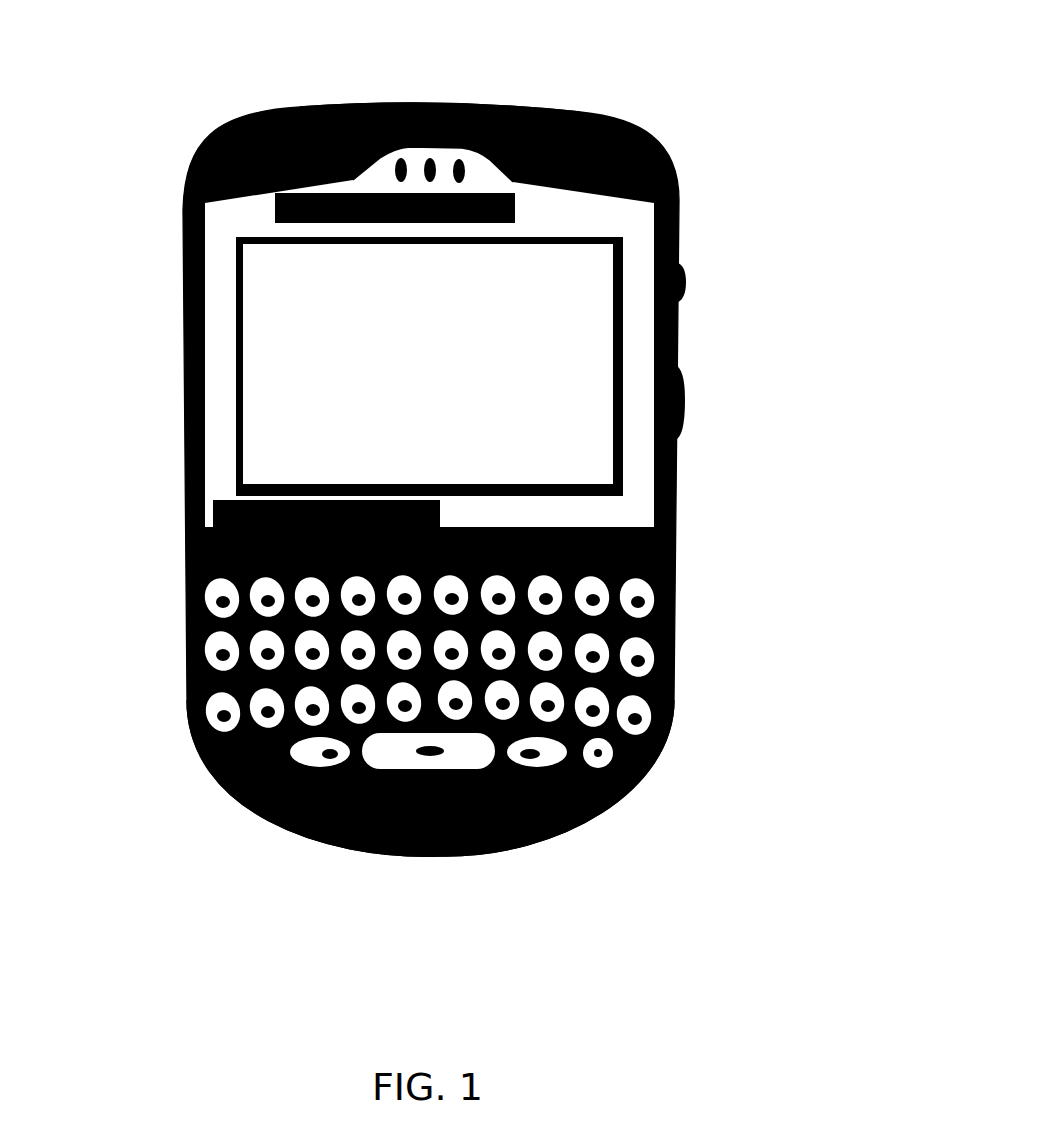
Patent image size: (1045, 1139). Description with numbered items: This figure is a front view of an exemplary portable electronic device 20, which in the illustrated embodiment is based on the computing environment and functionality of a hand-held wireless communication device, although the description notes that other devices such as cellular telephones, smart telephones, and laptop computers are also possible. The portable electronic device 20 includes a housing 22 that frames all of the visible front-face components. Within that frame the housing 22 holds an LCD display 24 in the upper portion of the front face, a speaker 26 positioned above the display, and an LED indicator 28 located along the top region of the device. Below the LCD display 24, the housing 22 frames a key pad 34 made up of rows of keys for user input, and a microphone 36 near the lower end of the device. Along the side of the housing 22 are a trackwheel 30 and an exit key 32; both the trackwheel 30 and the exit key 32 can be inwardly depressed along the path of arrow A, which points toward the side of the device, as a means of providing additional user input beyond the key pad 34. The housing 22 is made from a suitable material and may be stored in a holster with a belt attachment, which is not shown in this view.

The portable electronic device 20 is at (742, 76).
The housing 22 is at (595, 828).
The LCD display 24 is at (265, 350).
The speaker 26 is at (422, 150).
The LED indicator 28 is at (613, 125).
The trackwheel 30 is at (684, 288).
The exit key 32 is at (684, 410).
The key pad 34 is at (645, 718).
The microphone 36 is at (530, 843).
The arrow A is at (708, 354).